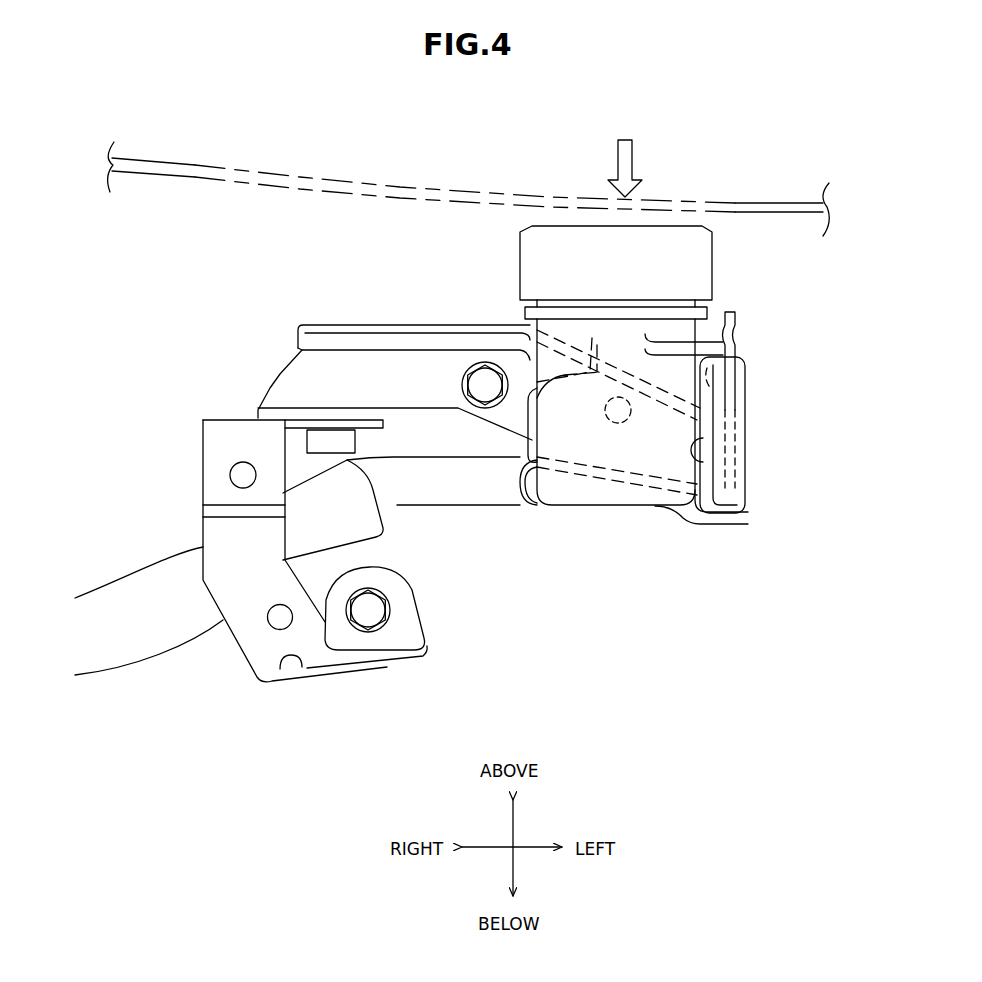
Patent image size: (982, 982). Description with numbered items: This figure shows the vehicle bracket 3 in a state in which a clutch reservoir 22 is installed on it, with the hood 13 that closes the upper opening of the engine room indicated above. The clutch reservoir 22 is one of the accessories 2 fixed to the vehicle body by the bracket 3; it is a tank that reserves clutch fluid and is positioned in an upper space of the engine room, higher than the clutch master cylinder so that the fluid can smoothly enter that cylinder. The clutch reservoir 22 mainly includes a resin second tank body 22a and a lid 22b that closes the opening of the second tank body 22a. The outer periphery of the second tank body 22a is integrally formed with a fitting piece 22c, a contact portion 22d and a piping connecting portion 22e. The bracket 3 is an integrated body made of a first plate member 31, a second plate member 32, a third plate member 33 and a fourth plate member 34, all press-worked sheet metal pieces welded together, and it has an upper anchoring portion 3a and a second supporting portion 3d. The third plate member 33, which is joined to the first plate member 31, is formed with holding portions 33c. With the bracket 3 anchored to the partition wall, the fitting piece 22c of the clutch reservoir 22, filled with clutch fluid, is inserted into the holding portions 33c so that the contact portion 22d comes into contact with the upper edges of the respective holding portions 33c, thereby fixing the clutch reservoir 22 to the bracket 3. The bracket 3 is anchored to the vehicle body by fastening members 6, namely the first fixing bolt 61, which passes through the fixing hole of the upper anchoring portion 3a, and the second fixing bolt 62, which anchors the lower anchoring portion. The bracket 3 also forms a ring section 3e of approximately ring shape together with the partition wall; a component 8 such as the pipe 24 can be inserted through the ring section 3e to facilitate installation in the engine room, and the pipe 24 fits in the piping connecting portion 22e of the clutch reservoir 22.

The hood 13 is at (394, 190).
The accessory 2 is at (667, 348).
The clutch reservoir 22 is at (667, 348).
The second tank body 22a is at (620, 450).
The lid 22b is at (705, 270).
The fitting piece 22c is at (714, 378).
The contact portion 22d is at (712, 322).
The piping connecting portion 22e is at (540, 503).
The bracket 3 is at (387, 507).
The upper anchoring portion 3a is at (462, 385).
The second supporting portion 3d is at (700, 497).
The ring section 3e is at (225, 537).
The first plate member 31 is at (268, 382).
The second plate member 32 is at (380, 660).
The third plate member 33 is at (734, 492).
The holding portions 33c is at (704, 458).
The fourth plate member 34 is at (746, 417).
The fastening members 6 is at (427, 486).
The first fixing bolt 61 is at (485, 387).
The second fixing bolt 62 is at (370, 612).
The component 8 is at (401, 508).
The pipe 24 is at (422, 485).